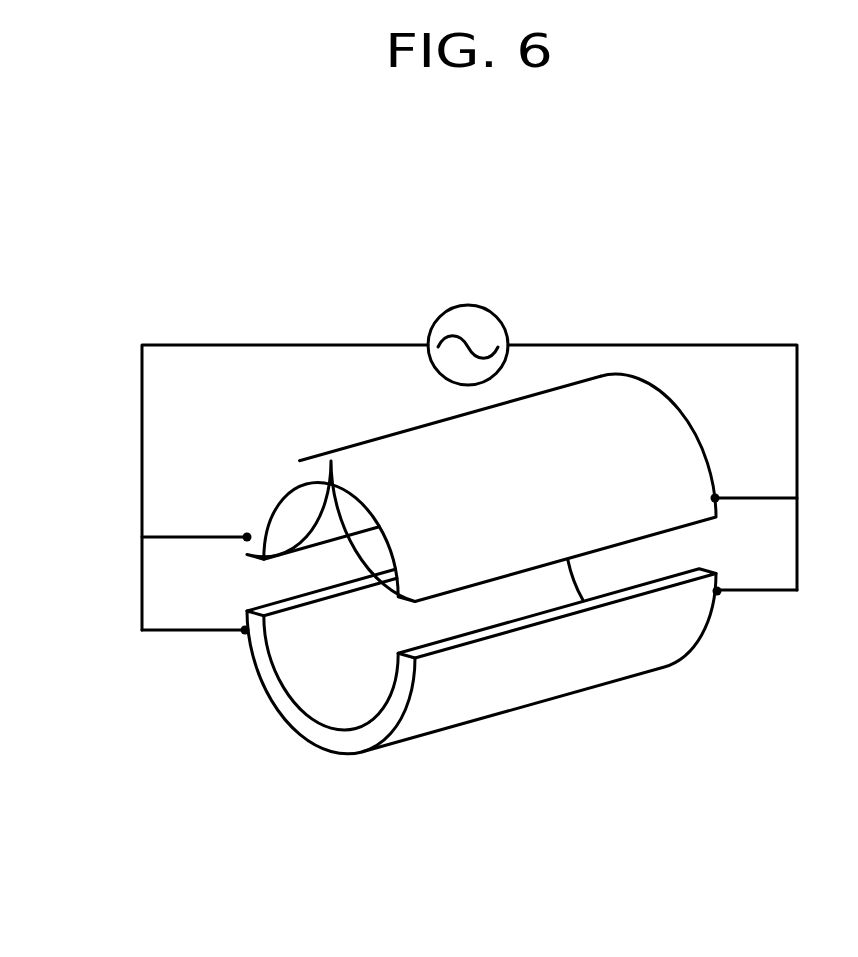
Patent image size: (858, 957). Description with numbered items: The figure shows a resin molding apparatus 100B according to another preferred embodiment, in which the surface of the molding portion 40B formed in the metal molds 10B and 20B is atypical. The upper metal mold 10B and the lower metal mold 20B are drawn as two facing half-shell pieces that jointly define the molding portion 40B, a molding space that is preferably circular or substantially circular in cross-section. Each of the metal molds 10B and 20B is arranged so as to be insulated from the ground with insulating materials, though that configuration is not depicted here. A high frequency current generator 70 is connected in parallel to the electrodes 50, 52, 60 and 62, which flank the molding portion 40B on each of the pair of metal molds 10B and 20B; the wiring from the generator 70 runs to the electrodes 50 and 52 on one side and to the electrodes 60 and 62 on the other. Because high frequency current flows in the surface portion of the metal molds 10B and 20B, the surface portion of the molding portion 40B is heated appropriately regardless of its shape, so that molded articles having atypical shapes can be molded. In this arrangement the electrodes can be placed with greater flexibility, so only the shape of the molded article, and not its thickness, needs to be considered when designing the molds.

The resin molding apparatus 100B is at (840, 229).
The upper metal mold 10B is at (373, 440).
The lower metal mold 20B is at (548, 685).
The molding portion 40B is at (330, 747).
The electrode 50 is at (247, 537).
The electrode 52 is at (245, 630).
The electrode 60 is at (715, 498).
The electrode 62 is at (718, 590).
The high frequency current generator 70 is at (502, 322).